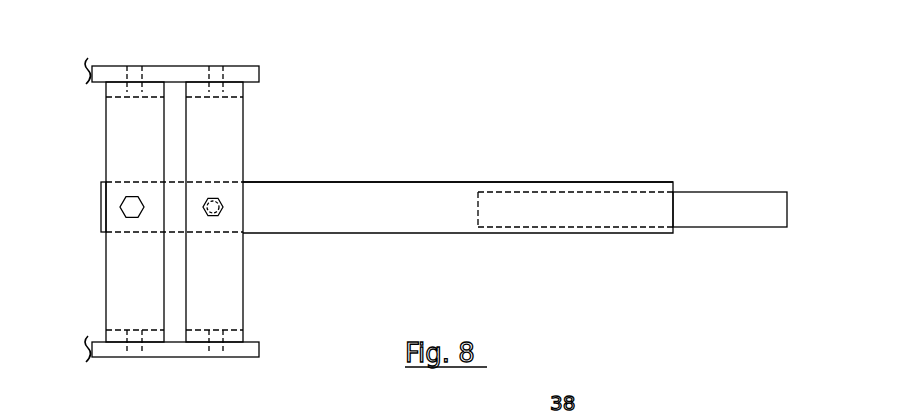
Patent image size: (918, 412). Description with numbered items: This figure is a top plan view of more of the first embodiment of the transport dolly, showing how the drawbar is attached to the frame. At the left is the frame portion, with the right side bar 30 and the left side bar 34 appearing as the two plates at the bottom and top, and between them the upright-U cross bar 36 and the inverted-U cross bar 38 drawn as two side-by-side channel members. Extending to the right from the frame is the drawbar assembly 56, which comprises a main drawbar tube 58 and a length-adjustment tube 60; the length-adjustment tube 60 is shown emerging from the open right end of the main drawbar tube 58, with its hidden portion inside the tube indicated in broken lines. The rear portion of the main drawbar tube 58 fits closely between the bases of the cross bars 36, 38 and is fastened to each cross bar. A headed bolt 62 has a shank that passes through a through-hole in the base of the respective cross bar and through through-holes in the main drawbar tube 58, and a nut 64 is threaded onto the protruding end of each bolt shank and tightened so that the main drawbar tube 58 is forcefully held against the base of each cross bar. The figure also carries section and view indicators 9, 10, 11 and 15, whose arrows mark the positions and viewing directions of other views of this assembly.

The section view arrows 9 is at (293, 46).
The section view arrows 10 is at (720, 171).
The section view arrows 11 is at (565, 170).
The view direction arrow 15 is at (570, 96).
The right side bar 30 is at (103, 358).
The left side bar 34 is at (162, 66).
The upright-U cross bar 36 is at (245, 130).
The inverted-U cross bar 38 is at (106, 153).
The drawbar assembly 56 is at (406, 178).
The main drawbar tube 58 is at (343, 180).
The length-adjustment tube 60 is at (787, 227).
The headed bolt 62 is at (130, 218).
The nut 64 is at (221, 215).